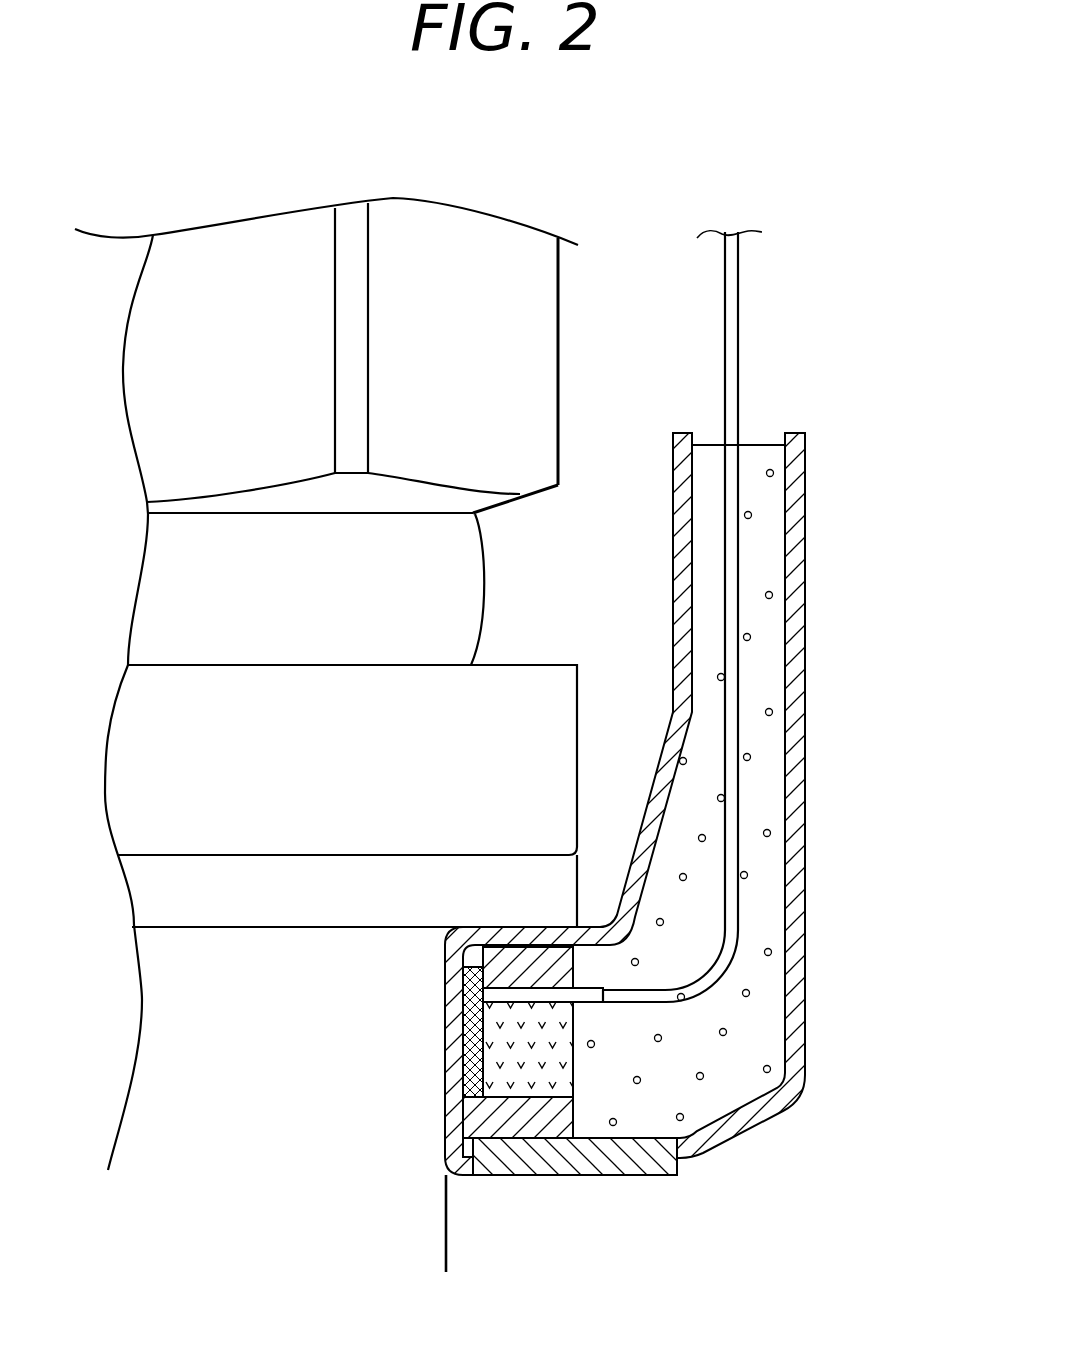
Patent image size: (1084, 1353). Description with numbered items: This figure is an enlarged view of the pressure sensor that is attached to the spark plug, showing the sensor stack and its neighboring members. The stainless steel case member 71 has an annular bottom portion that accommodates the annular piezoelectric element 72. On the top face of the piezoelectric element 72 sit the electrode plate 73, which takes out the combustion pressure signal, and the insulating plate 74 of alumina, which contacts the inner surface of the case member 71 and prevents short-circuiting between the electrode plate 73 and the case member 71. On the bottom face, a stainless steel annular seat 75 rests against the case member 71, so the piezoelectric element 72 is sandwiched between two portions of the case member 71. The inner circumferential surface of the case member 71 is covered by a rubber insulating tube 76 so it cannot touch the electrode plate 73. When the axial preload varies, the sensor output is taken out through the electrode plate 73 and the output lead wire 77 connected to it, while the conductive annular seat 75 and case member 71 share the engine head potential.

The case member 71 is at (797, 547).
The piezoelectric element 72 is at (530, 1103).
The electrode plate 73 is at (467, 992).
The insulating plate 74 is at (463, 958).
The annular seat 75 is at (477, 1128).
The insulating tube 76 is at (465, 1045).
The output lead wire 77 is at (739, 327).